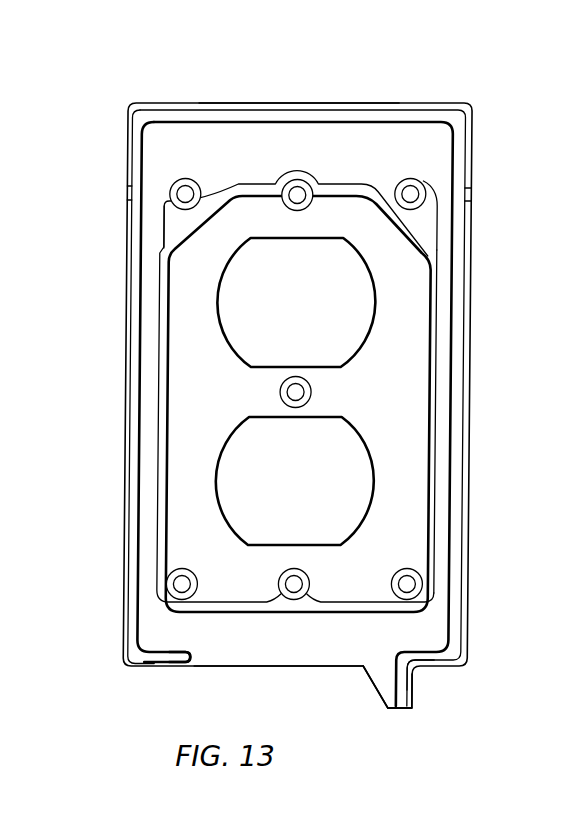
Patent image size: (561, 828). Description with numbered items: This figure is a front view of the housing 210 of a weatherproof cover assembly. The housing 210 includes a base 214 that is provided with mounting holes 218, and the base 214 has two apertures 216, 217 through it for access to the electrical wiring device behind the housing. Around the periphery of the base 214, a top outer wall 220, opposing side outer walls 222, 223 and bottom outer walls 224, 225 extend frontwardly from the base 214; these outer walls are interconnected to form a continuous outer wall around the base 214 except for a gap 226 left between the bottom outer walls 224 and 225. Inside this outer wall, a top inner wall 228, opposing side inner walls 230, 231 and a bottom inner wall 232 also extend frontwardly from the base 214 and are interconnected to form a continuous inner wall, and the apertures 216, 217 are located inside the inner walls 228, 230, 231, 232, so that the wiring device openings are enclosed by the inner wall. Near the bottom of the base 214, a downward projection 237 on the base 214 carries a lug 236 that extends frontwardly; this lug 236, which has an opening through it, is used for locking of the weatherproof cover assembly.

The housing 210 is at (477, 518).
The base 214 is at (381, 383).
The aperture 216 is at (274, 305).
The aperture 217 is at (274, 497).
The mounting holes 218 is at (195, 180).
The top outer wall 220 is at (323, 104).
The side outer wall 222 is at (128, 286).
The side outer wall 223 is at (463, 402).
The bottom outer wall 224 is at (178, 658).
The bottom outer wall 225 is at (420, 671).
The gap 226 is at (288, 654).
The top inner wall 228 is at (258, 184).
The side inner wall 230 is at (173, 410).
The side inner wall 231 is at (426, 418).
The bottom inner wall 232 is at (239, 603).
The lug 236 is at (410, 711).
The downward projection 237 is at (378, 690).